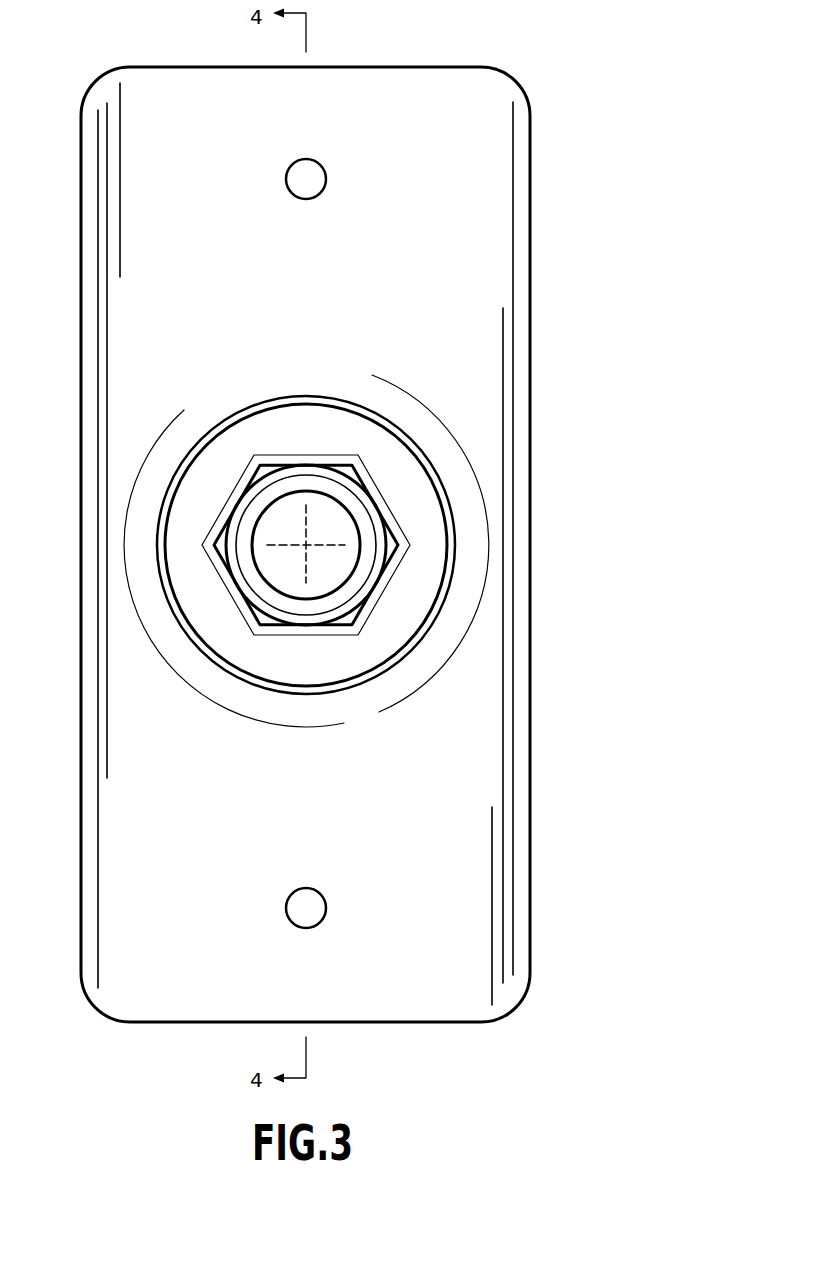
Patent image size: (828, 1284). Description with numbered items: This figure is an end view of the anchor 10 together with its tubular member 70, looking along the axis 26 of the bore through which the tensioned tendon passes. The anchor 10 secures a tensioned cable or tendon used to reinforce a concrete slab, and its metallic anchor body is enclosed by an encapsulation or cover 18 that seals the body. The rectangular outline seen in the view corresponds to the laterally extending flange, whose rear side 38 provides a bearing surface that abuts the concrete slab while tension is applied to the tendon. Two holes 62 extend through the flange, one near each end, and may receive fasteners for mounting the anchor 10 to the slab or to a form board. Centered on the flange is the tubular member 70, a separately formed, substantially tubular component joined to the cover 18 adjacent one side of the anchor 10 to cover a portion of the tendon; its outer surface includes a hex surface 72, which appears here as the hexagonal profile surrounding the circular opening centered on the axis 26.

The anchor 10 is at (598, 250).
The cover 18 is at (581, 729).
The axis 26 is at (306, 545).
The rear side 38 is at (509, 846).
The holes 62 is at (312, 172).
The tubular member 70 is at (348, 612).
The hex surface 72 is at (253, 612).